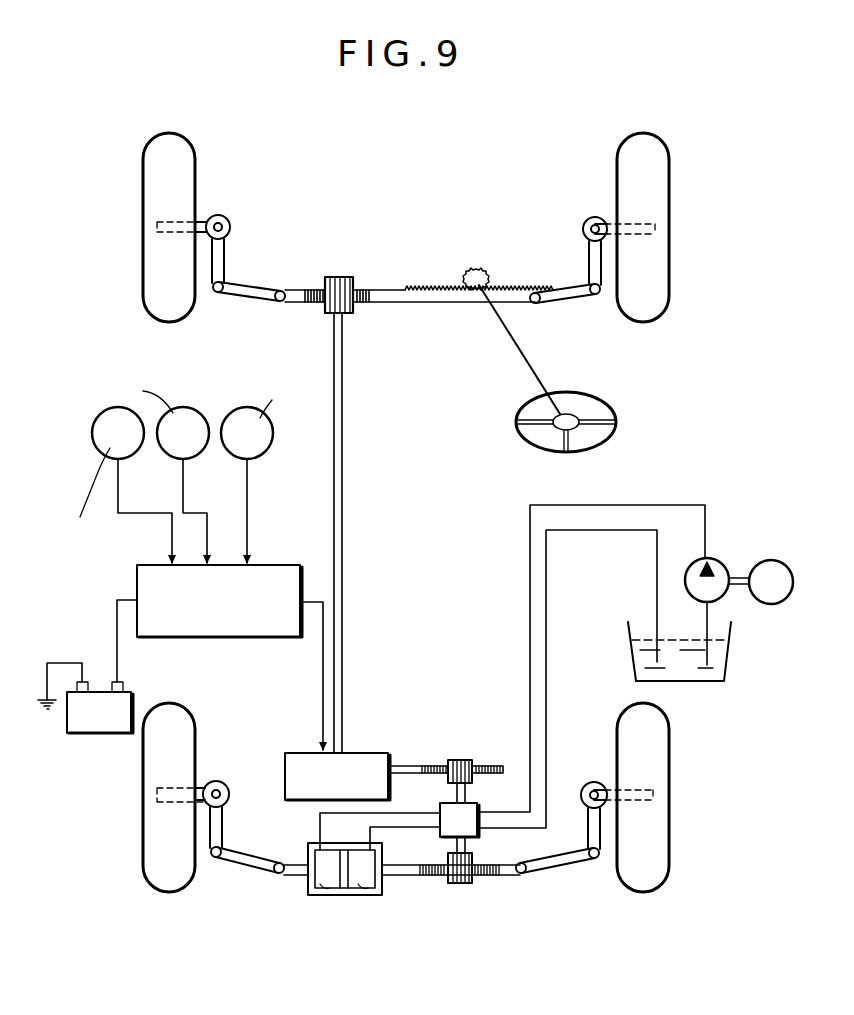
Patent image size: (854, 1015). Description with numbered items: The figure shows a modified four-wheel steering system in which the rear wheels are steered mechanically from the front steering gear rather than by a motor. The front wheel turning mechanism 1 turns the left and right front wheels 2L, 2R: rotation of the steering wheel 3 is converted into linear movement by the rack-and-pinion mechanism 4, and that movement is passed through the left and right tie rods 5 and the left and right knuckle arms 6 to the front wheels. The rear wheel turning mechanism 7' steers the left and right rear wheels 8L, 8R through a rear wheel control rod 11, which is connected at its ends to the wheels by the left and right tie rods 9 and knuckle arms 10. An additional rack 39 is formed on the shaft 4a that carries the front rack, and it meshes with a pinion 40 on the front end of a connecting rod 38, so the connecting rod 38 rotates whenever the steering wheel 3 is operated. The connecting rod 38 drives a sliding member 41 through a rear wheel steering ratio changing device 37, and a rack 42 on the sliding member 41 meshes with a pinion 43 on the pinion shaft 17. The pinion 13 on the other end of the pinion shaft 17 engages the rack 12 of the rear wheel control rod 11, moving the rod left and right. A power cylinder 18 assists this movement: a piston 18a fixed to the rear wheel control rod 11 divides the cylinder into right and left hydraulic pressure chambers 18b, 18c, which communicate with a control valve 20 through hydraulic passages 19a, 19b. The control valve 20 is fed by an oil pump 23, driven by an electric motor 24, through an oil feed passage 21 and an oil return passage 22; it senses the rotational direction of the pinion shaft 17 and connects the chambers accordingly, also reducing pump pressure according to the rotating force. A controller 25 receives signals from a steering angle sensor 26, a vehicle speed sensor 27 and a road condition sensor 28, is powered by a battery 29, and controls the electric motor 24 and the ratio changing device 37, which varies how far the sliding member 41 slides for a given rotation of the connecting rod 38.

The front wheel turning mechanism 1 is at (400, 222).
The left front wheel 2L is at (142, 158).
The right front wheel 2R is at (672, 168).
The steering wheel 3 is at (601, 398).
The rack-and-pinion mechanism 4 is at (494, 272).
The shaft 4a is at (412, 304).
The tie rods 5 is at (248, 302).
The knuckle arms 6 is at (223, 263).
The rear wheel turning mechanism 7' is at (466, 600).
The left rear wheel 8L is at (142, 863).
The right rear wheel 8R is at (670, 863).
The tie rods 9 is at (240, 867).
The knuckle arms 10 is at (223, 828).
The rear wheel control rod 11 is at (403, 880).
The rack 12 is at (487, 877).
The pinion 13 is at (457, 887).
The pinion shaft 17 is at (464, 848).
The power cylinder 18 is at (332, 904).
The piston 18a is at (353, 883).
The right hydraulic pressure chamber 18b is at (310, 882).
The left hydraulic pressure chamber 18c is at (370, 897).
The hydraulic passage 19a is at (395, 810).
The hydraulic passage 19b is at (398, 827).
The control valve 20 is at (473, 800).
The oil feed passage 21 is at (611, 505).
The oil return passage 22 is at (577, 535).
The oil pump 23 is at (728, 598).
The electric motor 24 is at (780, 560).
The controller 25 is at (282, 564).
The steering angle sensor 26 is at (97, 447).
The vehicle speed sensor 27 is at (177, 418).
The road condition sensor 28 is at (267, 418).
The battery 29 is at (107, 735).
The rear wheel steering ratio changing device 37 is at (284, 772).
The connecting rod 38 is at (370, 533).
The additional rack 39 is at (365, 287).
The pinion 40 is at (320, 313).
The sliding member 41 is at (395, 763).
The rack 42 is at (487, 764).
The pinion 43 is at (456, 760).